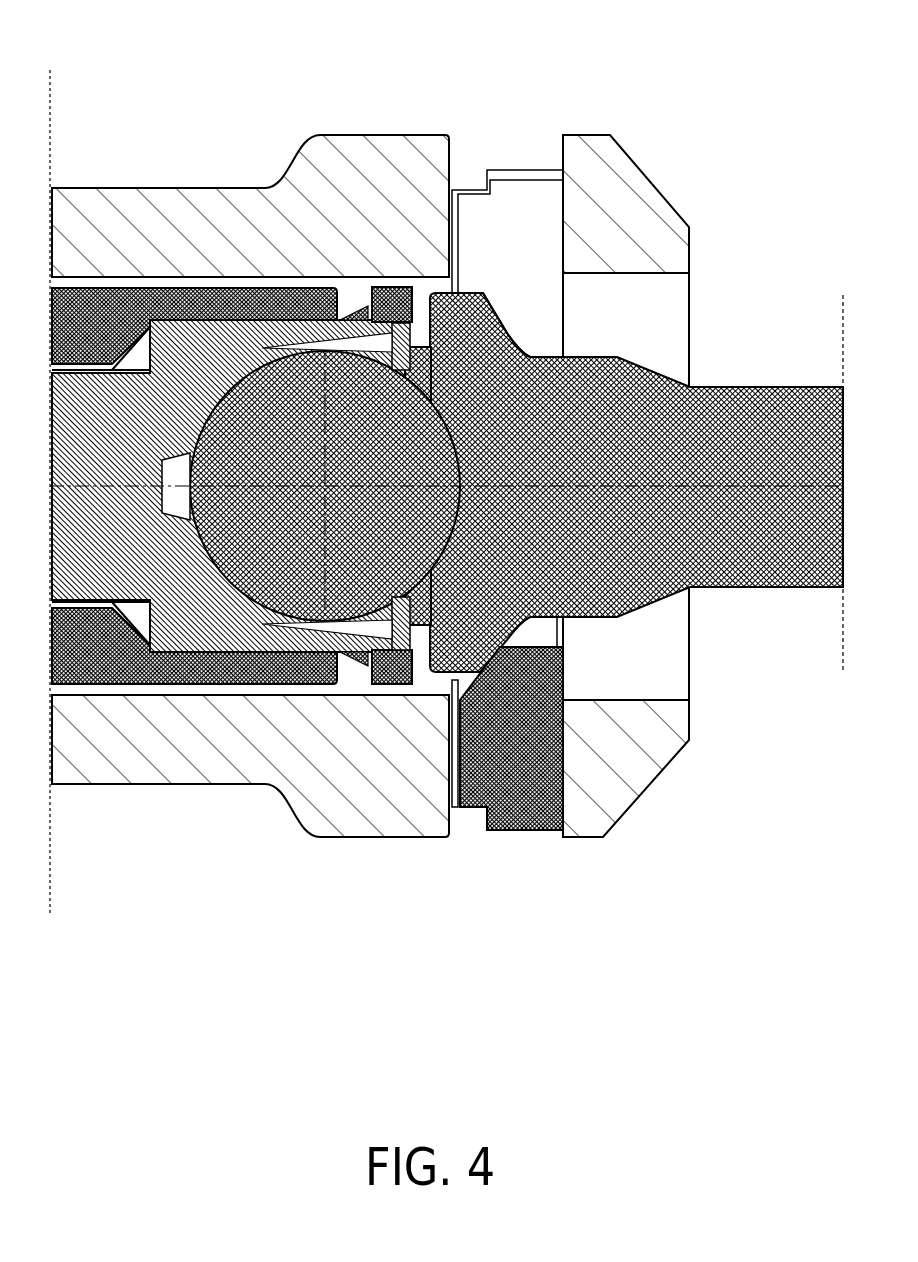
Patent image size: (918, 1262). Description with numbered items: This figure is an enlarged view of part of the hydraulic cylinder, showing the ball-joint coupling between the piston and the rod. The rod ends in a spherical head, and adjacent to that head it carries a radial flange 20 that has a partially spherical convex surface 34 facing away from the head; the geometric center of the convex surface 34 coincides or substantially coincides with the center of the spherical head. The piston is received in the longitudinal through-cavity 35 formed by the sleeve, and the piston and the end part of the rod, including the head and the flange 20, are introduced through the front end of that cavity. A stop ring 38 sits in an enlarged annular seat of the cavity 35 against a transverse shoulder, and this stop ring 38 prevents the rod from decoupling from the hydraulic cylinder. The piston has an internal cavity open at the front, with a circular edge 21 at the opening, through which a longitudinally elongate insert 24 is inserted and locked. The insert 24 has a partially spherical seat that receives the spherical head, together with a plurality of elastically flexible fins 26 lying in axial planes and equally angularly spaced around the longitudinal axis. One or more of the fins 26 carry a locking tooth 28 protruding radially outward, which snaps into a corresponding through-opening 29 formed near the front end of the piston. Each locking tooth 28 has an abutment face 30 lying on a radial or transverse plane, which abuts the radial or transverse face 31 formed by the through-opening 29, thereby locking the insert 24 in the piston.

The radial flange 20 is at (467, 293).
The circular edge 21 is at (424, 318).
The insert 24 is at (118, 283).
The elastically flexible fins 26 is at (295, 300).
The locking tooth 28 is at (375, 298).
The through-opening 29 is at (355, 312).
The abutment face 30 is at (398, 335).
The radial or transverse face 31 is at (367, 672).
The partially spherical convex surface 34 is at (505, 325).
The longitudinal through-cavity 35 is at (163, 697).
The stop ring 38 is at (520, 835).